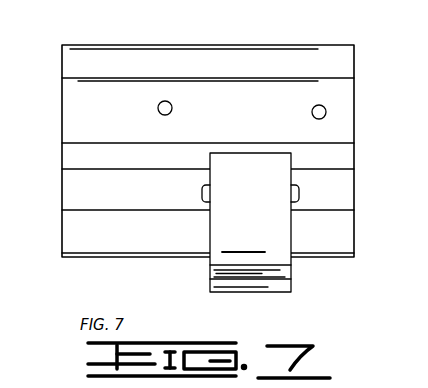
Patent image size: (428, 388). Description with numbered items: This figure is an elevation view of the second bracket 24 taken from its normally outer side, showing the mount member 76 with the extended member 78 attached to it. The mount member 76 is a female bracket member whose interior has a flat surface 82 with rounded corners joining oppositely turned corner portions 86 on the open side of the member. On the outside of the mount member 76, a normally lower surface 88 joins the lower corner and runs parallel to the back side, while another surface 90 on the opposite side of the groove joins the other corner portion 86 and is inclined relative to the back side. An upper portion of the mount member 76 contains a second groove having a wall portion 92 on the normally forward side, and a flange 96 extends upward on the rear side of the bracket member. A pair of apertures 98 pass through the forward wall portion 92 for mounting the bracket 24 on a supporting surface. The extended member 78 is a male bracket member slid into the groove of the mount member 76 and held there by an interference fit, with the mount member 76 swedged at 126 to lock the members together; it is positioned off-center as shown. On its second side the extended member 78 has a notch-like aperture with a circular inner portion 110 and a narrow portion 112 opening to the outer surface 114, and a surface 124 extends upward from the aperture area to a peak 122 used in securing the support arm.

The second bracket 24 is at (98, 38).
The mount member 76 is at (108, 265).
The extended member 78 is at (213, 298).
The flat surface 82 is at (100, 182).
The corner portions 86 is at (90, 170).
The lower surface 88 is at (93, 232).
The inclined surface 90 is at (94, 151).
The wall portion 92 is at (352, 88).
The flange 96 is at (72, 63).
The apertures 98 is at (173, 108).
The circular inner portion 110 is at (282, 272).
The narrow portion 112 is at (282, 290).
The outer surface 114 is at (270, 252).
The peak 122 is at (242, 152).
The surface 124 is at (272, 228).
The swedged portion 126 is at (201, 192).